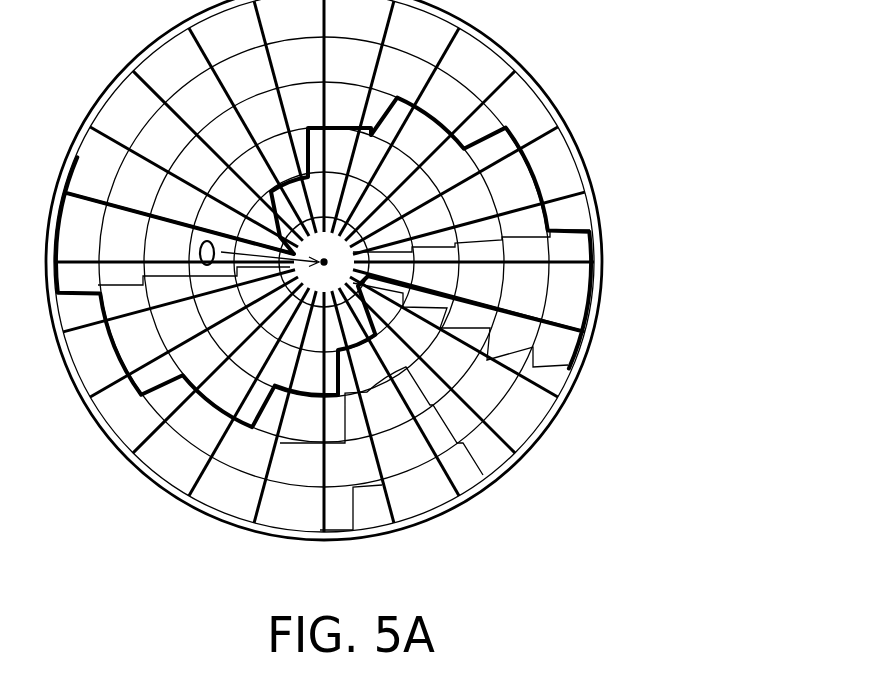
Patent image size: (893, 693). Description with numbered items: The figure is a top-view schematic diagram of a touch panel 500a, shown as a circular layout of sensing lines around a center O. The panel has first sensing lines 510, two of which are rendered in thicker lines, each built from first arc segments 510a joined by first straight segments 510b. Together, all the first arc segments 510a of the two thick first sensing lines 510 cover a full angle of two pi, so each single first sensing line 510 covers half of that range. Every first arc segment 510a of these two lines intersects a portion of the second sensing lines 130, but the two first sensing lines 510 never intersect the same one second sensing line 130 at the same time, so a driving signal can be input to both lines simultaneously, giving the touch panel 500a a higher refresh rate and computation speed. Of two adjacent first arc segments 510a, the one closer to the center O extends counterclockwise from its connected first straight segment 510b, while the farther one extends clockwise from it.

The second sensing line 130 is at (560, 185).
The first sensing line 510 is at (410, 314).
The first arc segment 510a is at (595, 305).
The first straight segment 510b is at (570, 232).
The touch panel 500a is at (738, 576).